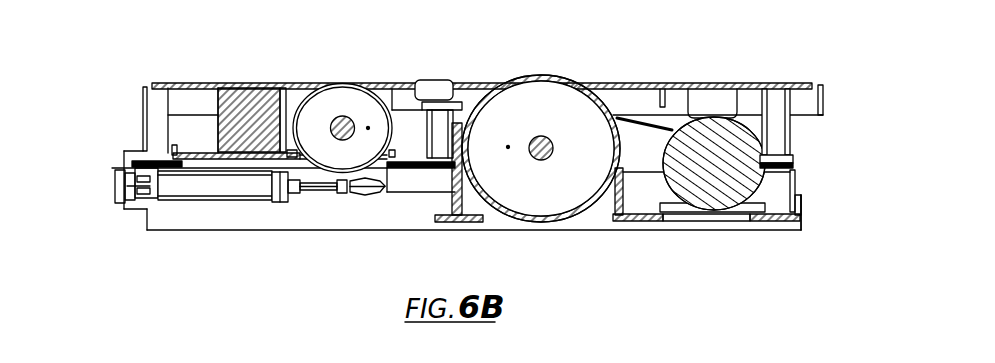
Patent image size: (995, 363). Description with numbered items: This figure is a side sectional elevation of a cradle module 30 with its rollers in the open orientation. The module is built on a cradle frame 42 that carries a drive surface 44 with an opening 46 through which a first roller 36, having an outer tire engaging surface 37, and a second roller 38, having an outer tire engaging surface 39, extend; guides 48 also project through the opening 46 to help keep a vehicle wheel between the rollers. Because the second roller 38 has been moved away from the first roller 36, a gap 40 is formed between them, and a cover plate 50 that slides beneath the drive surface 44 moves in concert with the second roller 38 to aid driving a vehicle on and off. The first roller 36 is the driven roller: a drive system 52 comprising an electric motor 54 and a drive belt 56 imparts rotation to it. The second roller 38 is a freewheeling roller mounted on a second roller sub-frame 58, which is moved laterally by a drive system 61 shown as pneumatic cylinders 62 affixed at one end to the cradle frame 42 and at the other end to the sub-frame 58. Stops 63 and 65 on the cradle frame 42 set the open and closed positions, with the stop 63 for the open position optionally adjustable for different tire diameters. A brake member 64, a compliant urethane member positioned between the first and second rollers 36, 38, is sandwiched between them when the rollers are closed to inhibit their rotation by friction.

The cradle module 30 is at (140, 137).
The first roller 36 is at (548, 95).
The outer tire engaging surface 37 is at (562, 216).
The second roller 38 is at (343, 95).
The outer tire engaging surface 39 is at (292, 105).
The gap 40 is at (405, 103).
The cradle frame 42 is at (158, 240).
The drive surface 44 is at (718, 83).
The opening 46 is at (484, 80).
The guides 48 is at (430, 77).
The cover plate 50 is at (207, 100).
The drive system 52 is at (700, 222).
The electric motor 54 is at (789, 158).
The drive belt 56 is at (634, 120).
The second roller sub-frame 58 is at (188, 150).
The drive system 61 is at (283, 211).
The pneumatic cylinders 62 is at (198, 188).
The stop 63 is at (172, 150).
The brake member 64 is at (446, 152).
The stop 65 is at (450, 190).